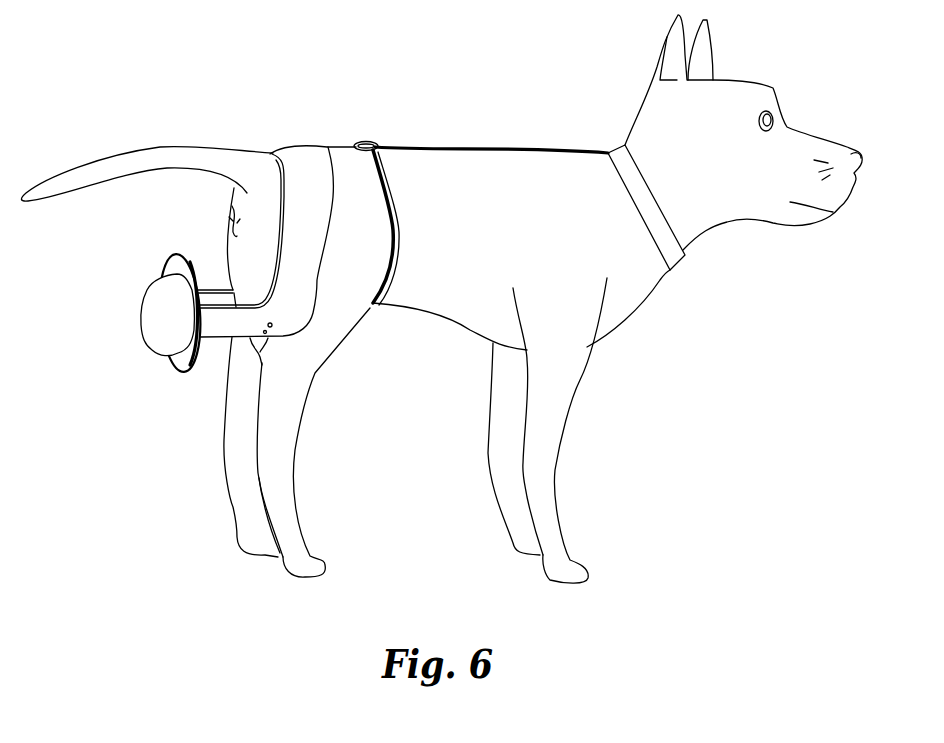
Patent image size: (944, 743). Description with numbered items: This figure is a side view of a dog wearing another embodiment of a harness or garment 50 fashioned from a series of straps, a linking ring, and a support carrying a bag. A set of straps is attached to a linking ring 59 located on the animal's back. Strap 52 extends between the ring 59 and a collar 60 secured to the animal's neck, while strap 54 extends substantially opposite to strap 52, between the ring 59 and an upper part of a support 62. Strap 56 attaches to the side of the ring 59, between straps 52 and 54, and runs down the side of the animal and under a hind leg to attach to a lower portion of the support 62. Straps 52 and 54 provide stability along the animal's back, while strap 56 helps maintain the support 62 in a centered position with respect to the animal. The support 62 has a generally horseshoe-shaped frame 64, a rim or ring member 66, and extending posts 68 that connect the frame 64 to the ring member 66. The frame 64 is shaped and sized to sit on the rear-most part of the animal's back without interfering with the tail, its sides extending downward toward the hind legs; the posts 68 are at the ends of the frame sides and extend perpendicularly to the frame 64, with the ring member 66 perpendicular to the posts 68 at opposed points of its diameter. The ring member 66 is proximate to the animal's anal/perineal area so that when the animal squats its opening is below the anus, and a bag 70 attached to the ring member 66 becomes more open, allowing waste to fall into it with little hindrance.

The harness or garment 50 is at (422, 118).
The strap 52 is at (480, 148).
The strap 54 is at (337, 145).
The strap 56 is at (400, 265).
The linking ring 59 is at (363, 142).
The collar 60 is at (611, 148).
The support 62 is at (293, 160).
The frame 64 is at (305, 195).
The ring member 66 is at (183, 378).
The posts 68 is at (228, 328).
The bag 70 is at (153, 323).